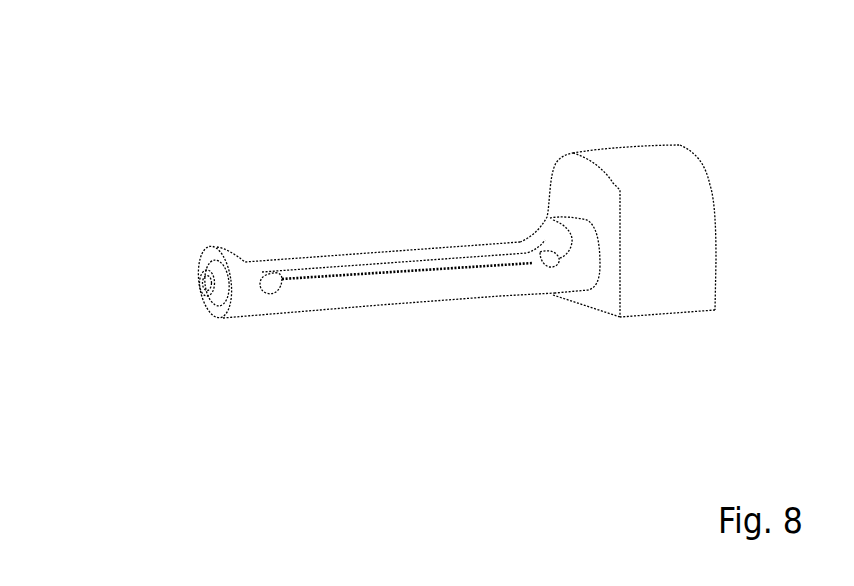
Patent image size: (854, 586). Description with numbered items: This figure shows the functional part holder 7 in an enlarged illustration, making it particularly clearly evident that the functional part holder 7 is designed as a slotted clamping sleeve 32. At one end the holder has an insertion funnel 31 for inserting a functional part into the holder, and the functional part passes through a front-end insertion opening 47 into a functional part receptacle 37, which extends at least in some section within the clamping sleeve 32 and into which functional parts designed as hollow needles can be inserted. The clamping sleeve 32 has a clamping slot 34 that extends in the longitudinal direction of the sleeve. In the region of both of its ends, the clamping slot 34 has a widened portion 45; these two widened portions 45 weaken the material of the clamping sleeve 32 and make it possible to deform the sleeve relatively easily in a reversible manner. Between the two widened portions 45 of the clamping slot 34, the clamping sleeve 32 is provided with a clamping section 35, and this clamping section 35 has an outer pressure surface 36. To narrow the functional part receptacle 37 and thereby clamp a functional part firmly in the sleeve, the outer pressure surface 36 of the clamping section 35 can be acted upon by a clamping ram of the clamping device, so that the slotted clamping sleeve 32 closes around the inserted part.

The functional part holder 7 is at (482, 126).
The insertion funnel 31 is at (203, 296).
The clamping sleeve 32 is at (292, 303).
The clamping slot 34 is at (402, 277).
The clamping section 35 is at (377, 268).
The outer pressure surface 36 is at (403, 250).
The functional part receptacle 37 is at (194, 278).
The widened portion 45 is at (270, 280).
The front-end insertion opening 47 is at (183, 290).